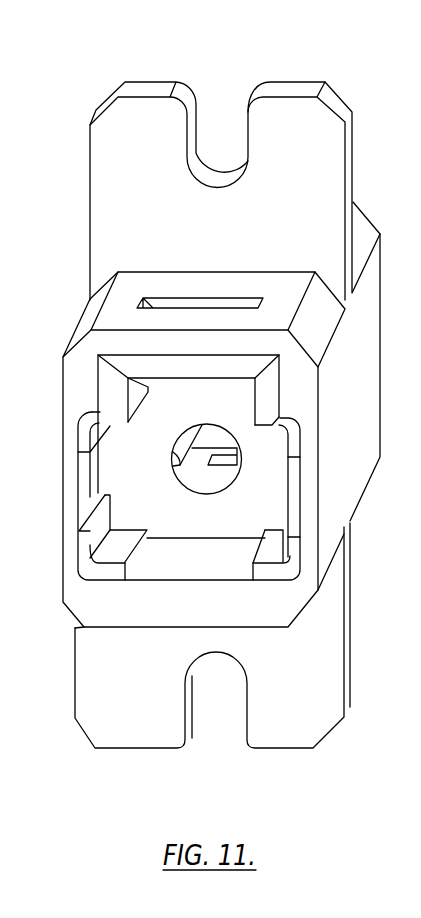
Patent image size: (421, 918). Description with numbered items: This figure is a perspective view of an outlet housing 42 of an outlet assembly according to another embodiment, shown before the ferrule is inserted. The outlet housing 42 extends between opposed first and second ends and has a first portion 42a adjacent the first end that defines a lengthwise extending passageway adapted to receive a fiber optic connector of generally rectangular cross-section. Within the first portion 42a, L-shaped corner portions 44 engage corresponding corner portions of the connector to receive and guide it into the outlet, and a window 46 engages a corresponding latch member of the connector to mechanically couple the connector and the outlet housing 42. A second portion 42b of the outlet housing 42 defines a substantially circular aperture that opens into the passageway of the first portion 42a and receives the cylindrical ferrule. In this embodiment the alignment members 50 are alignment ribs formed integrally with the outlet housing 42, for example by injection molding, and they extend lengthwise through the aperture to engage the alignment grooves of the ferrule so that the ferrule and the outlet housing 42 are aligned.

The outlet housing 42 is at (138, 115).
The first portion 42a is at (172, 563).
The second portion 42b is at (160, 487).
The L-shaped corner portions 44 is at (87, 572).
The window 46 is at (148, 297).
The alignment member 50 is at (240, 458).